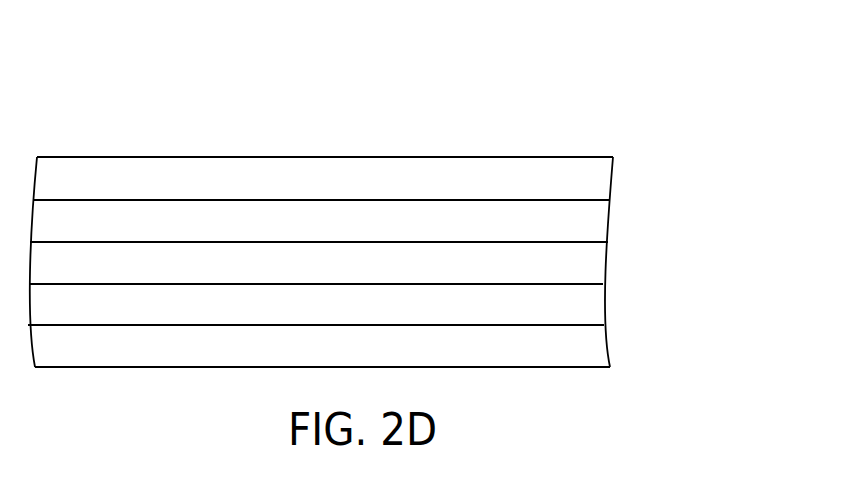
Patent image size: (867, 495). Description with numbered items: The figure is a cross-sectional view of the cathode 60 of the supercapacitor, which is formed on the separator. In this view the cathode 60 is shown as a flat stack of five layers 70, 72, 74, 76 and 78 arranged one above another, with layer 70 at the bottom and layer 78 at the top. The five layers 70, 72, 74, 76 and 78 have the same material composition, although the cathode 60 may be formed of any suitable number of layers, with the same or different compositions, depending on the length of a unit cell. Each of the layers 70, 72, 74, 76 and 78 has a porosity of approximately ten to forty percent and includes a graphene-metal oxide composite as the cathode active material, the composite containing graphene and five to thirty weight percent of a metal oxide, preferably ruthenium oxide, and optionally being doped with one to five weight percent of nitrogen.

The cathode 60 is at (662, 113).
The layer 70 is at (582, 348).
The layer 72 is at (580, 300).
The layer 74 is at (582, 265).
The layer 76 is at (590, 217).
The layer 78 is at (592, 182).